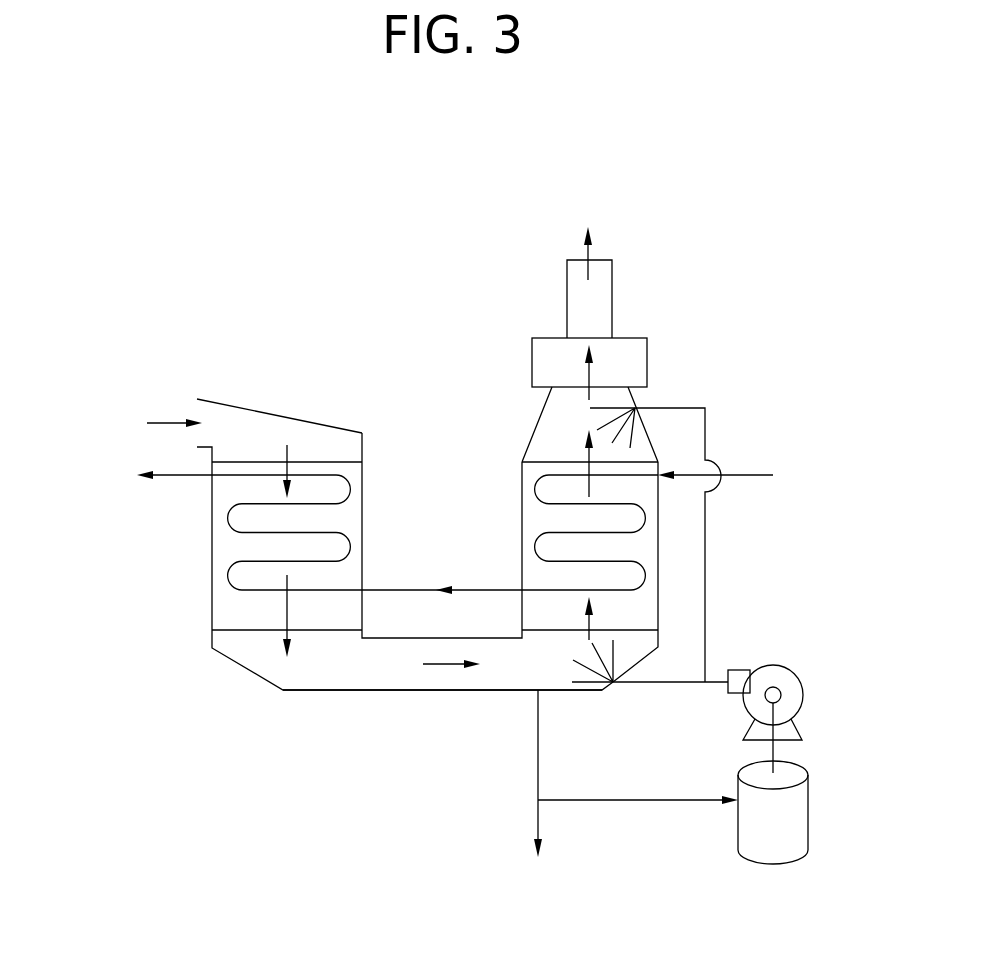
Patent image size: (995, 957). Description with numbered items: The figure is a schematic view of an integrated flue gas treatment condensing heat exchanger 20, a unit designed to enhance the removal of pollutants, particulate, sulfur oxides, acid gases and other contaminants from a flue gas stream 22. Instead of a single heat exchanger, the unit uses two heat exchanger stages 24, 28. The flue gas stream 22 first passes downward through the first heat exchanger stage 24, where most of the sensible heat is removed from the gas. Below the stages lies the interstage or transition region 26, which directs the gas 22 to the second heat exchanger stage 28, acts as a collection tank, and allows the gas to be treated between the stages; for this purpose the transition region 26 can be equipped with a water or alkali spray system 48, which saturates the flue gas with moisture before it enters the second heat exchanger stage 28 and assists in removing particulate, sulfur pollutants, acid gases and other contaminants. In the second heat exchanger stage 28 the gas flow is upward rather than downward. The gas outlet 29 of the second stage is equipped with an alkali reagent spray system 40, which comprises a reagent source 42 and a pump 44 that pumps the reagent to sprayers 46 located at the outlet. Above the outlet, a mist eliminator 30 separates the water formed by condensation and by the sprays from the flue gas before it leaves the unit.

The integrated flue gas treatment condensing heat exchanger 20 is at (372, 240).
The flue gas stream 22 is at (156, 422).
The first heat exchanger stage 24 is at (270, 518).
The transition region 26 is at (432, 673).
The second heat exchanger stage 28 is at (597, 552).
The gas outlet 29 is at (558, 407).
The mist eliminator 30 is at (620, 358).
The alkali reagent spray system 40 is at (819, 736).
The reagent source 42 is at (798, 837).
The pump 44 is at (773, 673).
The sprayers 46 is at (635, 408).
The water or alkali spray system 48 is at (612, 688).